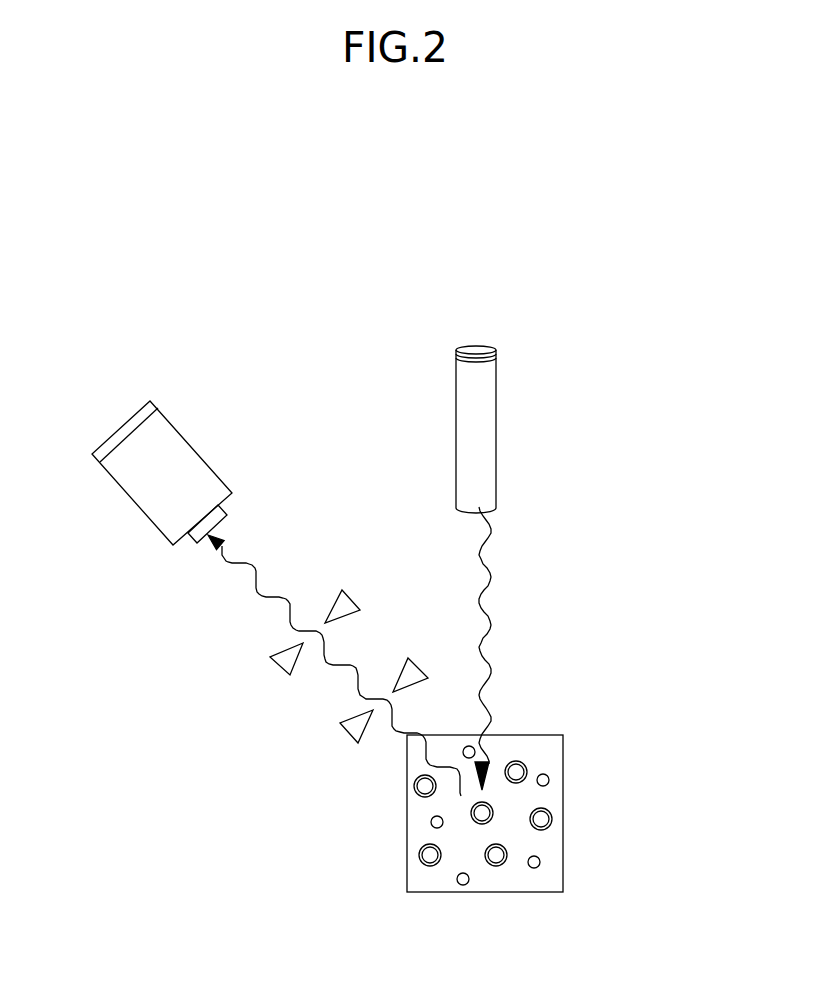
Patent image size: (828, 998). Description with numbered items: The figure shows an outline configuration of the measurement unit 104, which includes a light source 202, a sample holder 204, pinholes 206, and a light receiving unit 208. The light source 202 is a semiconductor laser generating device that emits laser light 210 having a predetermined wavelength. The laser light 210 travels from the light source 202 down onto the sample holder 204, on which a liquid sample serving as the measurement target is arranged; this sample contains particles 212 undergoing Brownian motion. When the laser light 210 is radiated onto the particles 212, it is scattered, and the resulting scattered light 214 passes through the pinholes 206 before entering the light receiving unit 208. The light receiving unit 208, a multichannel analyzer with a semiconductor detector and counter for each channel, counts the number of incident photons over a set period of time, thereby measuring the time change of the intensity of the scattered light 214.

The measurement unit 104 is at (309, 277).
The light source 202 is at (470, 347).
The sample holder 204 is at (565, 818).
The pinholes 206 is at (352, 732).
The light receiving unit 208 is at (172, 420).
The laser light 210 is at (492, 625).
The particles 212 is at (495, 867).
The scattered light 214 is at (262, 563).